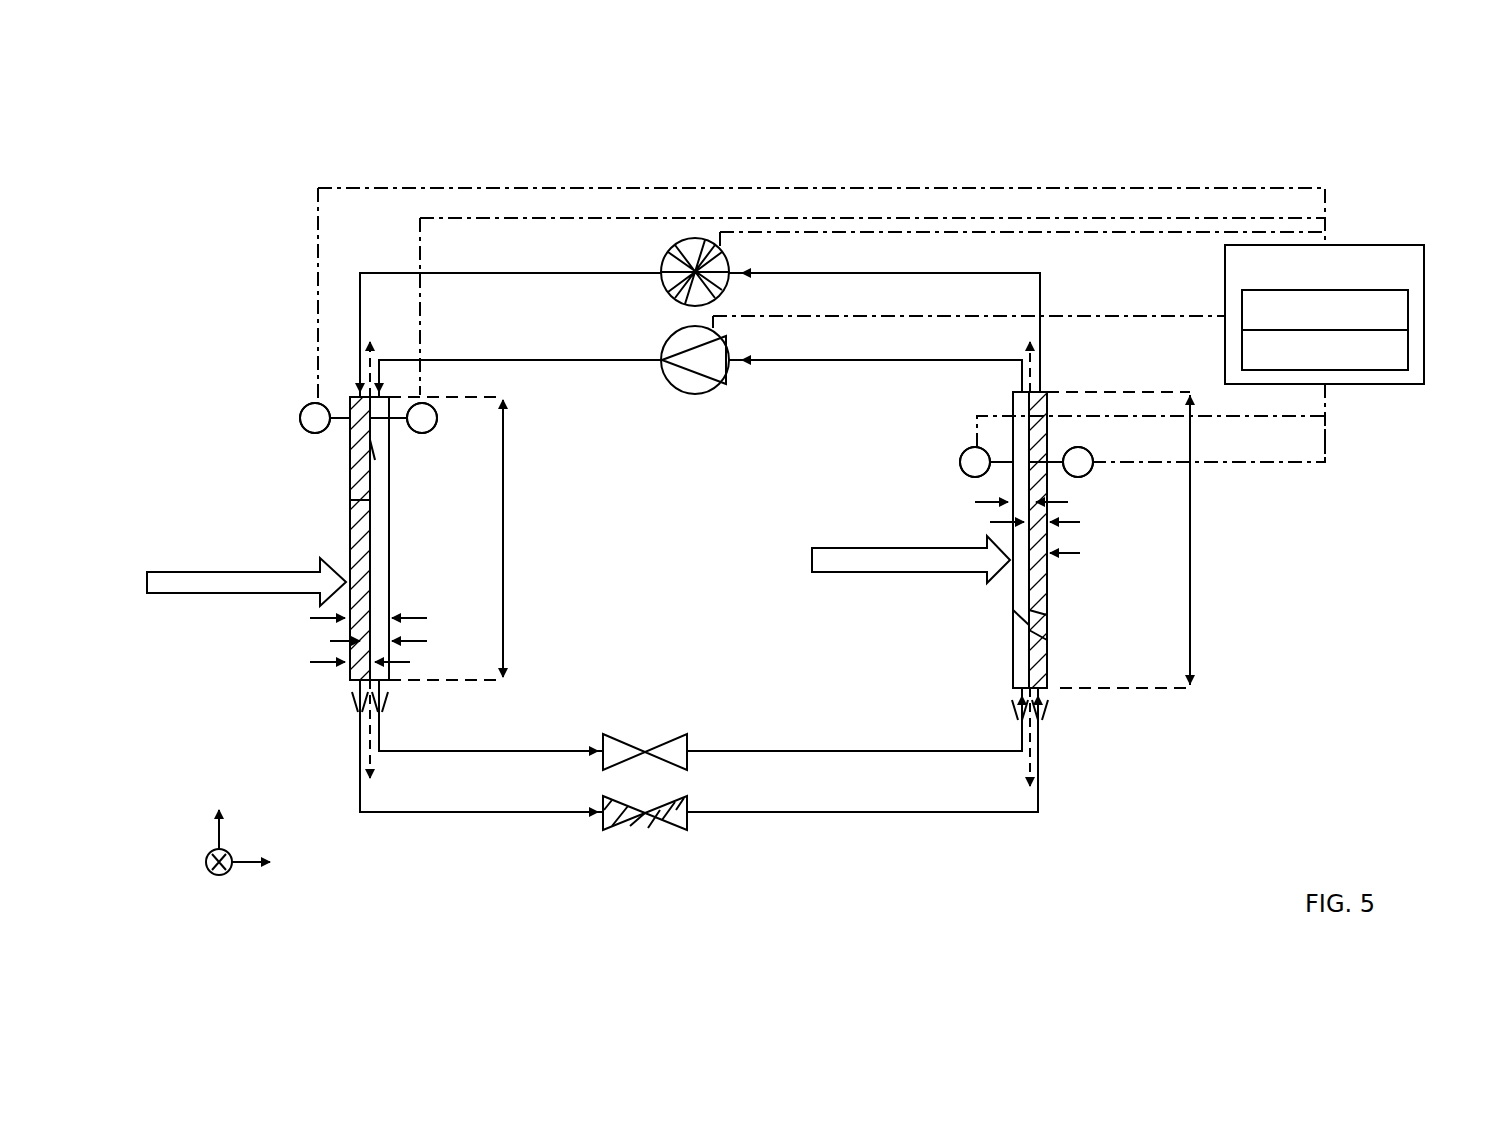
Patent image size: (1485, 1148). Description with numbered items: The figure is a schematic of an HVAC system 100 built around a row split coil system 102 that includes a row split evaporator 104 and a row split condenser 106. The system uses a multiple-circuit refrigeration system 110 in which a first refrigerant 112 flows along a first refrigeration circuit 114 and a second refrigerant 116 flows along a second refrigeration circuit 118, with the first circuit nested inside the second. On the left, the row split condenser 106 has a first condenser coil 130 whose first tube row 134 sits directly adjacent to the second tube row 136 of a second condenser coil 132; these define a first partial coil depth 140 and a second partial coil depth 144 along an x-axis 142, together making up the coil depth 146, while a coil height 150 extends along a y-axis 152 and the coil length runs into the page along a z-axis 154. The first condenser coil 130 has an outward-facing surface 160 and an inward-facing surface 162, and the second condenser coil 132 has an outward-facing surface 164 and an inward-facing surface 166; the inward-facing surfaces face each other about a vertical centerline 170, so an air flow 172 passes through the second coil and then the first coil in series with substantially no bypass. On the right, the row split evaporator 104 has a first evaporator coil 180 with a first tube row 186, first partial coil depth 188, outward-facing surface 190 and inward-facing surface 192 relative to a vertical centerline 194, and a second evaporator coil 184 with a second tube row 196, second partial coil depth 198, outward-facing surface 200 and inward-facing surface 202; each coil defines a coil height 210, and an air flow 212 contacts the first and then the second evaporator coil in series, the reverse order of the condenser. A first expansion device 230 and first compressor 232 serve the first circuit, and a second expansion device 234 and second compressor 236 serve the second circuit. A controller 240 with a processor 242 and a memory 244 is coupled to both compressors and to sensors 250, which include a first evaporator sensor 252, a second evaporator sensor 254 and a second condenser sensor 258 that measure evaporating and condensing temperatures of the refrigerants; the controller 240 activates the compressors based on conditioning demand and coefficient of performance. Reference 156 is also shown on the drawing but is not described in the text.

The HVAC system 100 is at (1012, 118).
The row split coil system 102 is at (846, 165).
The row split evaporator 104 is at (1128, 660).
The row split condenser 106 is at (312, 676).
The multiple-circuit refrigeration system 110 is at (1003, 862).
The first refrigerant 112 is at (810, 746).
The first refrigeration circuit 114 is at (850, 745).
The second refrigerant 116 is at (790, 815).
The second refrigeration circuit 118 is at (847, 818).
The first condenser coil 130 is at (412, 468).
The second condenser coil 132 is at (345, 552).
The first tube row 134 is at (385, 712).
The second tube row 136 is at (355, 718).
The first partial coil depth 140 is at (415, 642).
The x-axis 142 is at (250, 860).
The second partial coil depth 144 is at (312, 658).
The coil depth 146 is at (318, 630).
The coil height 150 is at (505, 540).
The y-axis 152 is at (212, 828).
The z-axis 154 is at (215, 876).
The second sensor 156 is at (430, 432).
The outward-facing surface 160 is at (392, 557).
The inward-facing surface 162 is at (370, 490).
The outward-facing surface 164 is at (370, 500).
The inward-facing surface 166 is at (380, 440).
The vertical centerline 170 is at (375, 348).
The air flow 172 is at (147, 582).
The first evaporator coil 180 is at (1008, 665).
The second evaporator coil 184 is at (1055, 557).
The first tube row 186 is at (1025, 730).
The first partial coil depth 188 is at (985, 500).
The outward-facing surface 190 is at (1013, 598).
The inward-facing surface 192 is at (1030, 630).
The vertical centerline 194 is at (1033, 372).
The second tube row 196 is at (1040, 715).
The second partial coil depth 198 is at (998, 521).
The outward-facing surface 200 is at (1032, 620).
The inward-facing surface 202 is at (1033, 648).
The coil height 210 is at (1212, 520).
The air flow 212 is at (812, 560).
The first expansion device 230 is at (660, 745).
The first compressor 232 is at (735, 380).
The second expansion device 234 is at (668, 828).
The second compressor 236 is at (665, 300).
The controller 240 is at (1340, 245).
The processor 242 is at (1408, 310).
The memory 244 is at (1408, 350).
The sensors 250 is at (298, 412).
The first evaporator sensor 252 is at (960, 460).
The second evaporator sensor 254 is at (1083, 478).
The second condenser sensor 258 is at (315, 433).